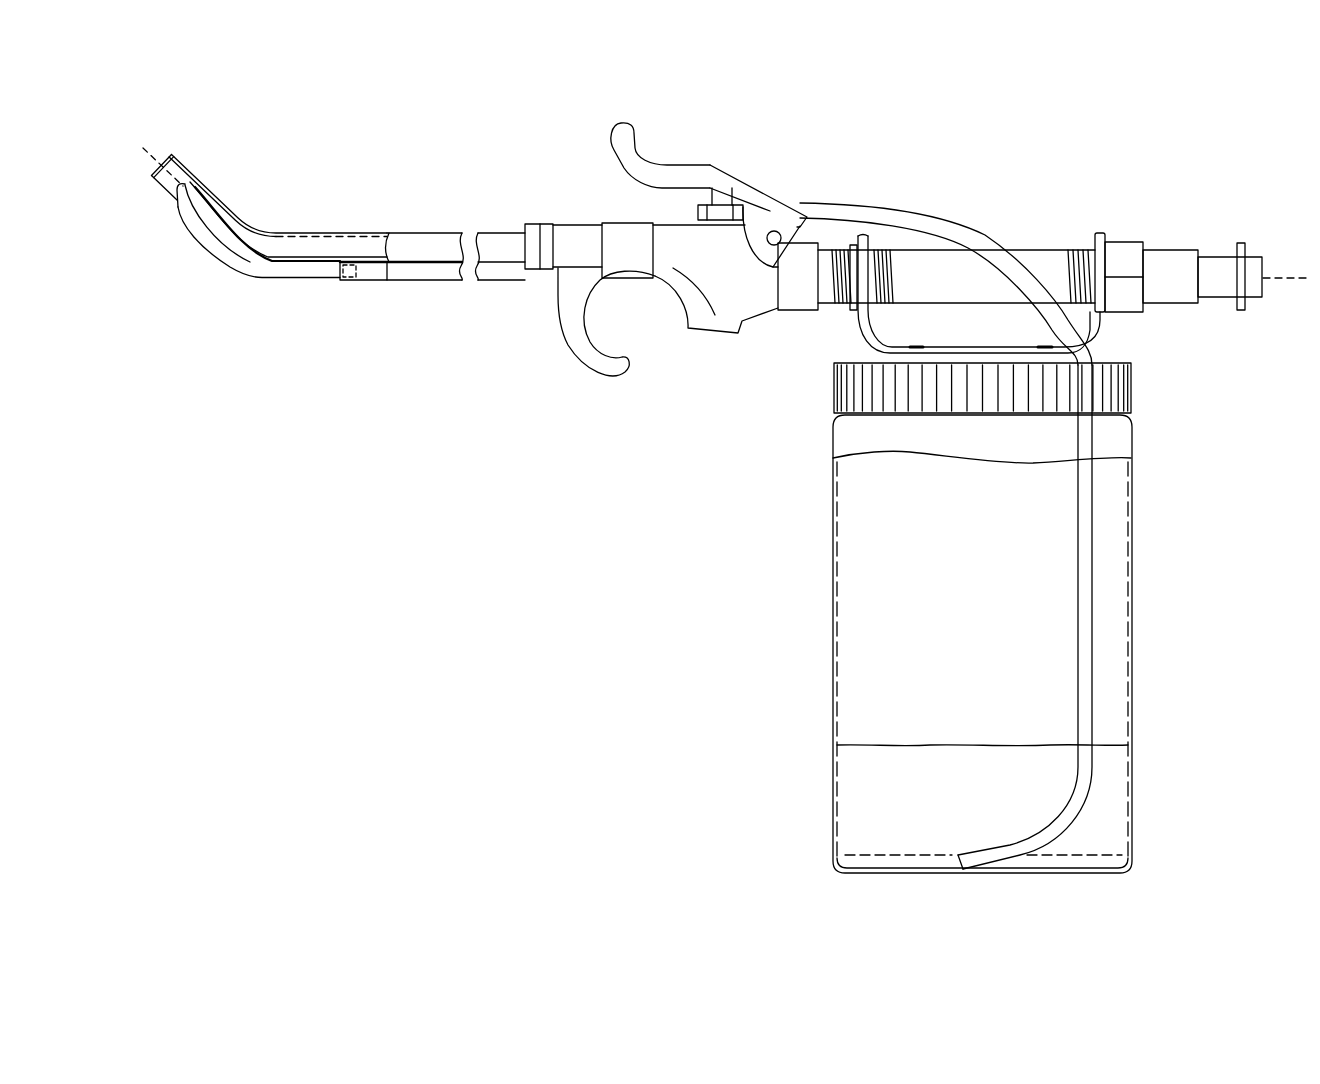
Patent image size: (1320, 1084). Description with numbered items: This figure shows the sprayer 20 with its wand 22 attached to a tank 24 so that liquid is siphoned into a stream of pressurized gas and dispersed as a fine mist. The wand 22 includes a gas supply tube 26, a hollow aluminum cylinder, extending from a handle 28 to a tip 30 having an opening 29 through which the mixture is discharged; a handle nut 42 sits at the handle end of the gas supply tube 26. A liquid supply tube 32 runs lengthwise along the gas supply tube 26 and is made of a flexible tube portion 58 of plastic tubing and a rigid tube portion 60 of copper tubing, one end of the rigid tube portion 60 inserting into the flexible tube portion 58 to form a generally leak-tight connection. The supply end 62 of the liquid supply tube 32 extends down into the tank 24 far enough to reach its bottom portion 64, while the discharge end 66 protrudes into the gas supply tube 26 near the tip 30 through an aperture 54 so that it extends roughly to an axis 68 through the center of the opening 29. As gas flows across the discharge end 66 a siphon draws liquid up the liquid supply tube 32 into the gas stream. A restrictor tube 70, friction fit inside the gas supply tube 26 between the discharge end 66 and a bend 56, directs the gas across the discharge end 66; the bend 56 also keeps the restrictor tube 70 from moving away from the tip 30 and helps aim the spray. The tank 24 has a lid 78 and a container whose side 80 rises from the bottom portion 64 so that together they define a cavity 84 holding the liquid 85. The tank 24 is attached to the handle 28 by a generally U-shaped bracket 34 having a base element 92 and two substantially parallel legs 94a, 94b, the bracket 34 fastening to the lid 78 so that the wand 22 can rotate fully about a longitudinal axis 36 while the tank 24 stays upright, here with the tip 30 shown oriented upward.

The spray applicator device 20 is at (1027, 138).
The wand 22 is at (324, 221).
The tank 24 is at (1193, 565).
The gas supply tube 26 is at (410, 240).
The handle 28 is at (803, 253).
The opening 29 is at (172, 137).
The tip 30 is at (190, 167).
The liquid supply tube 32 is at (450, 300).
The U-shaped bracket 34 is at (1103, 323).
The longitudinal axis 36 is at (1280, 287).
The handle nut 42 is at (532, 232).
The aperture 54 is at (168, 209).
The bend 56 is at (243, 238).
The flexible tube portion 58 is at (385, 278).
The rigid tube portion 60 is at (253, 270).
The supply end 62 is at (1052, 823).
The bottom portion 64 is at (1110, 873).
The discharge end 66 is at (192, 203).
The axis 68 is at (145, 150).
The restrictor tube 70 is at (213, 213).
The lid 78 is at (1125, 393).
The side 80 is at (1136, 644).
The cavity 84 is at (855, 686).
The liquid 85 is at (1103, 790).
The base element 92 is at (943, 358).
The leg 94a is at (858, 317).
The leg 94b is at (1102, 242).